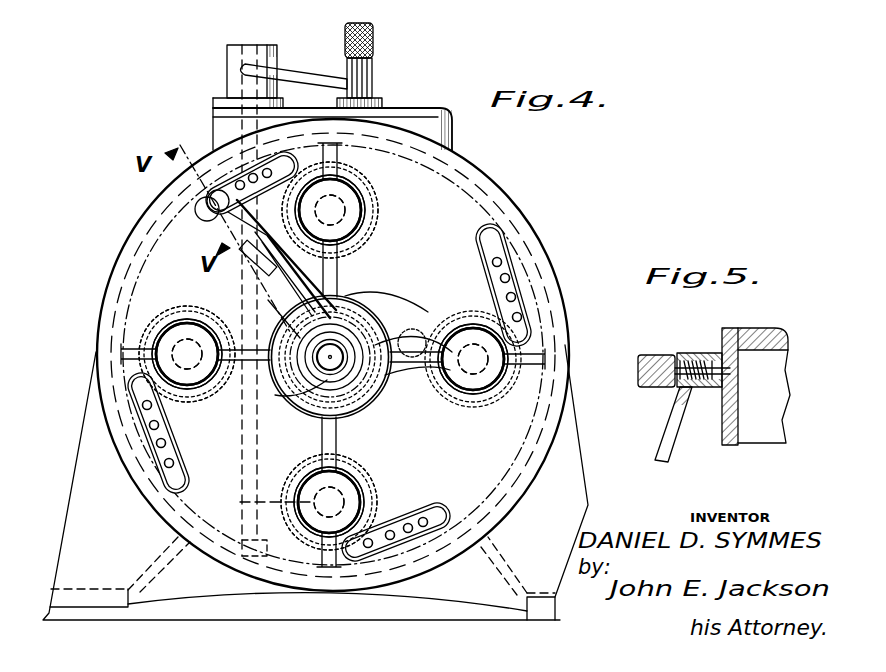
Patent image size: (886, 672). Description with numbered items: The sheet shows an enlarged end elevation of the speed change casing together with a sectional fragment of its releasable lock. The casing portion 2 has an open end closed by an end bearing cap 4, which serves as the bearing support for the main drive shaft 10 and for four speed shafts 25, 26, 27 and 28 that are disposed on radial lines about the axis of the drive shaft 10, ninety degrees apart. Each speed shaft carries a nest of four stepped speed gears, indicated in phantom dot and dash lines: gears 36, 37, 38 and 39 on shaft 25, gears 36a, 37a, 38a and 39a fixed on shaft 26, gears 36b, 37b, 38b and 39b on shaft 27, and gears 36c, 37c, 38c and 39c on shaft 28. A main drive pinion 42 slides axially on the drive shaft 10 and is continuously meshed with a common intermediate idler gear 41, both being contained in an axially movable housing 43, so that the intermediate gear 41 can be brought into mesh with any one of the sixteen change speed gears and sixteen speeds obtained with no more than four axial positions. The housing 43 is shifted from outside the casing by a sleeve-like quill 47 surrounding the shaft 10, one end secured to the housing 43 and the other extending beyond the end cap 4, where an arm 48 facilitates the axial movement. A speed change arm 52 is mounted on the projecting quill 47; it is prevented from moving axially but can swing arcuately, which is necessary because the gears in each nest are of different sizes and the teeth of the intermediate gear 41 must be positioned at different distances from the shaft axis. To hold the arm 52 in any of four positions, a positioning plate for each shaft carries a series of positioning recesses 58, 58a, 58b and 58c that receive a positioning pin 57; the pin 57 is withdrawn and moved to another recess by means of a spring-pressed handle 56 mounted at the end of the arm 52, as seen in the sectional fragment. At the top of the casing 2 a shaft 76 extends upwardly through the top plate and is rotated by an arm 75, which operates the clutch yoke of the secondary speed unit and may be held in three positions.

In FIG. 4, the casing portion 2 is at (315, 310).
In FIG. 5, the casing portion 2 is at (760, 342).
In FIG. 5, the end bearing cap 4 is at (722, 431).
In FIG. 4, the main drive shaft 10 is at (316, 390).
In FIG. 4, the speed shaft 25 is at (350, 213).
In FIG. 4, the speed shaft 26 is at (465, 392).
In FIG. 4, the speed shaft 27 is at (252, 503).
In FIG. 4, the speed shaft 28 is at (192, 385).
In FIG. 4, the speed gear 36 is at (356, 259).
In FIG. 4, the speed gear 36a is at (520, 381).
In FIG. 4, the speed gear 36b is at (329, 537).
In FIG. 4, the speed gear 36c is at (198, 305).
In FIG. 4, the speed gear 37 is at (363, 233).
In FIG. 4, the speed gear 37a is at (515, 398).
In FIG. 4, the speed gear 37b is at (370, 489).
In FIG. 4, the speed gear 37c is at (158, 312).
In FIG. 4, the speed gear 38 is at (364, 193).
In FIG. 4, the speed gear 38a is at (476, 398).
In FIG. 4, the speed gear 38b is at (366, 475).
In FIG. 4, the speed gear 38c is at (160, 325).
In FIG. 4, the speed gear 39 is at (366, 179).
In FIG. 4, the speed gear 39a is at (372, 387).
In FIG. 4, the speed gear 39b is at (340, 471).
In FIG. 4, the speed gear 39c is at (150, 336).
In FIG. 4, the intermediate idler gear 41 is at (372, 300).
In FIG. 4, the main drive pinion 42 is at (412, 329).
In FIG. 4, the axially movable housing 43 is at (425, 330).
In FIG. 4, the quill 47 is at (326, 384).
In FIG. 4, the arm 48 is at (246, 291).
In FIG. 4, the speed change arm 52 is at (238, 219).
In FIG. 5, the speed change arm 52 is at (668, 456).
In FIG. 4, the spring-pressed handle 56 is at (207, 201).
In FIG. 5, the spring-pressed handle 56 is at (648, 355).
In FIG. 5, the positioning pin 57 is at (705, 355).
In FIG. 4, the positioning recess 58 is at (497, 262).
In FIG. 5, the positioning recess 58 is at (735, 367).
In FIG. 4, the positioning recess 58a is at (505, 277).
In FIG. 4, the positioning recess 58b is at (511, 297).
In FIG. 4, the positioning recess 58c is at (517, 317).
In FIG. 4, the arm 75 is at (283, 65).
In FIG. 4, the shaft 76 is at (232, 68).